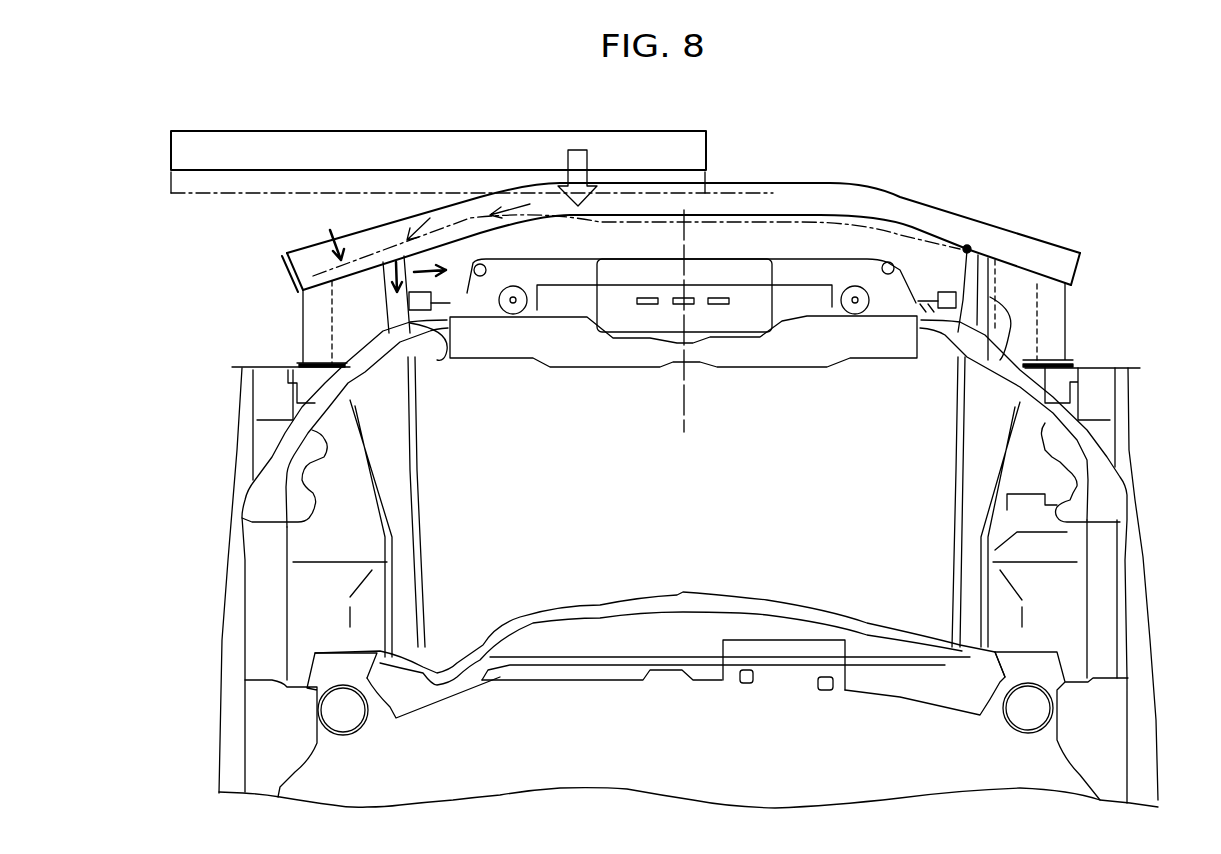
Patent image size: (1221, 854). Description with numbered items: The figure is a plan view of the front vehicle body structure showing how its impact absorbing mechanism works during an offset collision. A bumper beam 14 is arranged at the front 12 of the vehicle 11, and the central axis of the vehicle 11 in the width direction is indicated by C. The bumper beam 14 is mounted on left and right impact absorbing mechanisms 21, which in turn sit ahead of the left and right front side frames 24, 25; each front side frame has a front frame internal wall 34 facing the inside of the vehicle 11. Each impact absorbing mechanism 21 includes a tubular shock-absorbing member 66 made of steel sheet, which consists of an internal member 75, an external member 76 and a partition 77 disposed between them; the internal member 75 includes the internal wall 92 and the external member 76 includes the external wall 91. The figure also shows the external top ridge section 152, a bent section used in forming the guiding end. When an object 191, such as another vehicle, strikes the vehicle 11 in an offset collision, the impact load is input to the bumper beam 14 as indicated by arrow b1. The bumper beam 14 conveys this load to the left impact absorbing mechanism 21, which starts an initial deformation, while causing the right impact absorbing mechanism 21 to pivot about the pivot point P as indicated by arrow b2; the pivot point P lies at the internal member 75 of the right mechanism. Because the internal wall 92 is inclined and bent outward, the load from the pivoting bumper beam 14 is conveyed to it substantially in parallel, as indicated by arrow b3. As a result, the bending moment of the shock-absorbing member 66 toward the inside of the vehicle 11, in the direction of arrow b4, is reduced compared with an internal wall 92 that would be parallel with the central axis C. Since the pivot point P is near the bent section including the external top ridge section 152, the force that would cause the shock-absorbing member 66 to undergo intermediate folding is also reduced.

The object 191 is at (713, 135).
The vehicle 11 is at (885, 173).
The front 12 is at (740, 170).
The bumper beam 14 is at (837, 181).
The impact absorbing mechanism 21 is at (248, 336).
The left front side frame 24 is at (440, 493).
The right front side frame 25 is at (936, 494).
The front frame internal wall 34 is at (410, 408).
The shock-absorbing member 66 is at (366, 248).
The internal member 75 is at (400, 350).
The external member 76 is at (317, 300).
The partition 77 is at (330, 318).
The external wall 91 is at (303, 315).
The internal wall 92 is at (448, 300).
The external top ridge section 152 is at (993, 363).
The pivot point P is at (968, 248).
The central axis C is at (690, 430).
The arrow b1 is at (585, 174).
The arrow b2 is at (329, 232).
The arrow b3 is at (385, 284).
The arrow b4 is at (434, 259).